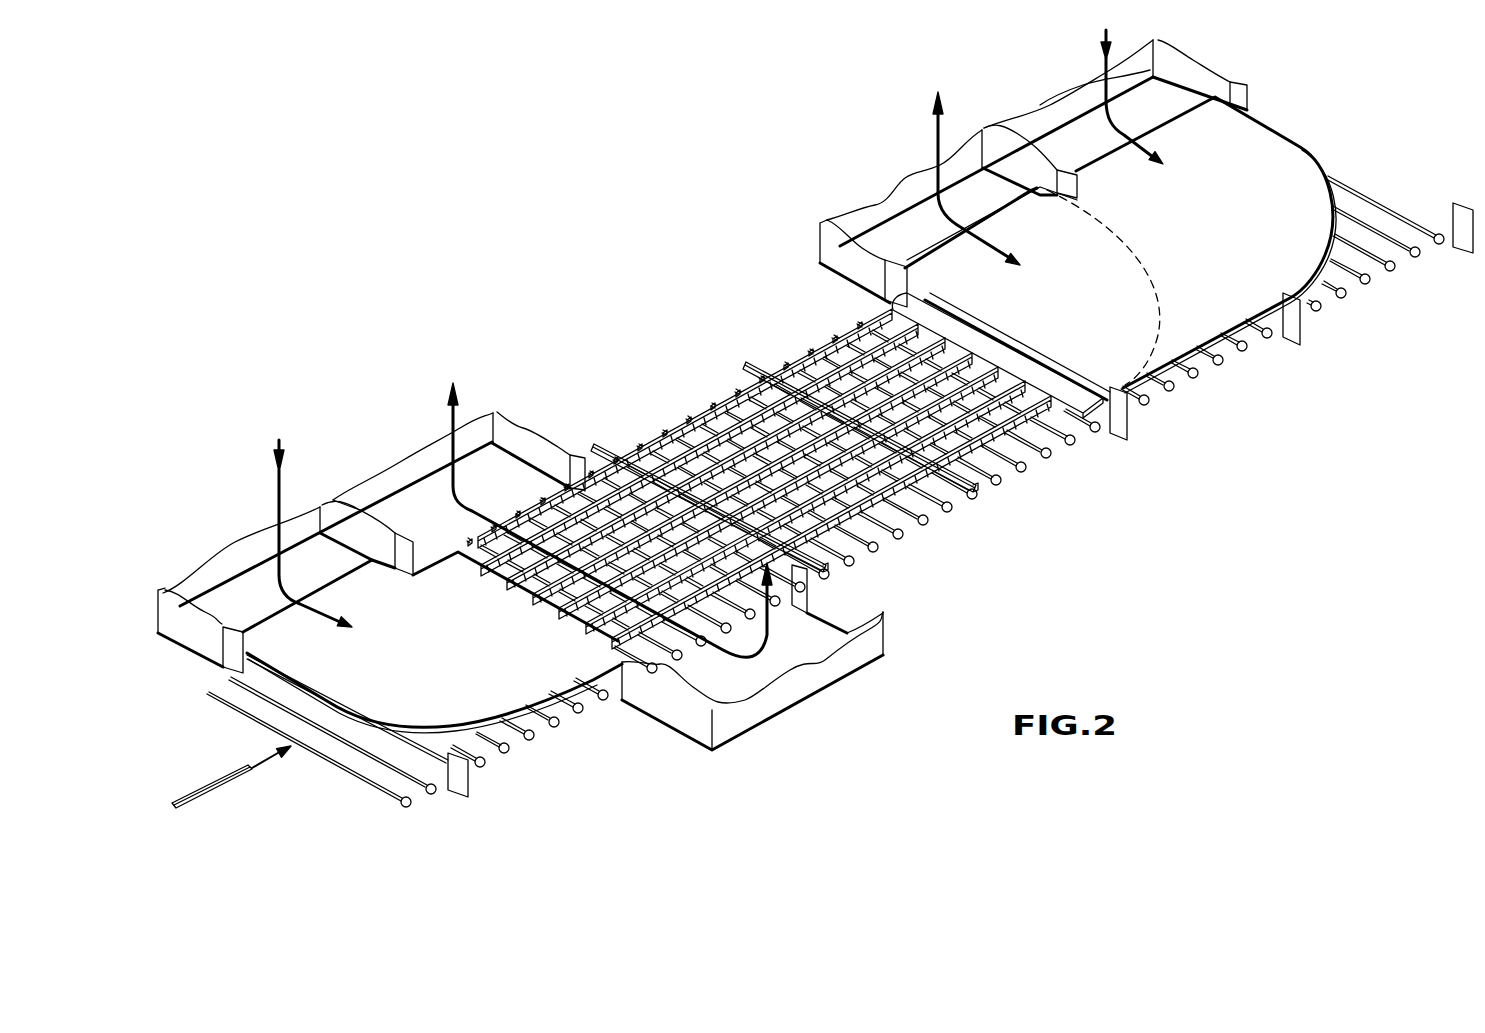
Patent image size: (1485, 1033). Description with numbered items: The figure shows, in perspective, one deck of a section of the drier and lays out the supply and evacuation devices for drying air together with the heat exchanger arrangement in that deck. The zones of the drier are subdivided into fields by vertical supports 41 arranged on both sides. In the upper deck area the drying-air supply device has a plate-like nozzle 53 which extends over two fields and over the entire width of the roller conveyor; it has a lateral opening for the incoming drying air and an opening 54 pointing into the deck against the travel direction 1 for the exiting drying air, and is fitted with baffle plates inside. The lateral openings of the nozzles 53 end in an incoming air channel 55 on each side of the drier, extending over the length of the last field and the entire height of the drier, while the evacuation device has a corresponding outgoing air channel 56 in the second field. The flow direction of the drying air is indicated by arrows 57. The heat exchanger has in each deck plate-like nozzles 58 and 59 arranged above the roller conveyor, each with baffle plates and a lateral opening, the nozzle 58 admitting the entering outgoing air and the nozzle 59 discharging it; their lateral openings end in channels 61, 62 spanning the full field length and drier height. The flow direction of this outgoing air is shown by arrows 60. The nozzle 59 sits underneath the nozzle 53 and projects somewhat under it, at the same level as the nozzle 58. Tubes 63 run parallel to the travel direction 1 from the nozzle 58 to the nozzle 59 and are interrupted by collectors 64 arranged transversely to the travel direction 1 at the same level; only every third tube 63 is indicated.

The travel direction 1 is at (218, 785).
The vertical supports 41 is at (1130, 422).
The plate-like nozzle 53 is at (1230, 227).
The opening 54 is at (1024, 352).
The incoming air channel 55 is at (1040, 117).
The outgoing air channel 56 is at (405, 458).
The arrows 57 is at (458, 408).
The nozzle 58 is at (443, 658).
The nozzle 59 is at (920, 313).
The arrows 60 is at (273, 487).
The channel 61 is at (240, 560).
The channel 62 is at (867, 207).
The tubes 63 is at (985, 450).
The collectors 64 is at (757, 352).